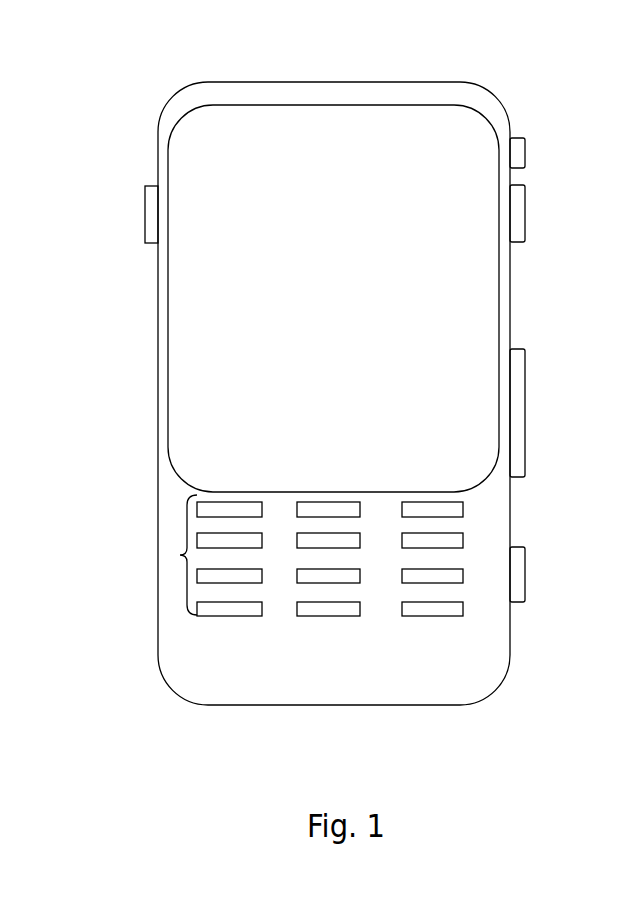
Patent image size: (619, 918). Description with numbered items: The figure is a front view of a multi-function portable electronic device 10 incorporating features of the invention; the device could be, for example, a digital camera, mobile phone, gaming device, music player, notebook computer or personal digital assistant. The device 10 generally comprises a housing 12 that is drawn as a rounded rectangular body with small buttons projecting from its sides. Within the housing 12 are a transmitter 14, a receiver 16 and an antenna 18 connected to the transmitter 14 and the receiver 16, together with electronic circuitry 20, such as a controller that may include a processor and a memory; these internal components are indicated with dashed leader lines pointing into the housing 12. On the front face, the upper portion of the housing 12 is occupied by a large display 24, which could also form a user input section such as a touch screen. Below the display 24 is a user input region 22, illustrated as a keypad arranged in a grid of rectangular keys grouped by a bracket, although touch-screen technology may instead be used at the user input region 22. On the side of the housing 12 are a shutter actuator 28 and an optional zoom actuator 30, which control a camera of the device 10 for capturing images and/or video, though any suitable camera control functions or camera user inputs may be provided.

The electronic device 10 is at (343, 416).
The housing 12 is at (486, 92).
The transmitter 14 is at (178, 615).
The receiver 16 is at (188, 660).
The antenna 18 is at (178, 492).
The electronic circuitry 20 is at (497, 535).
The user input region 22 is at (172, 553).
The display 24 is at (234, 283).
The shutter actuator 28 is at (526, 556).
The zoom actuator 30 is at (526, 380).